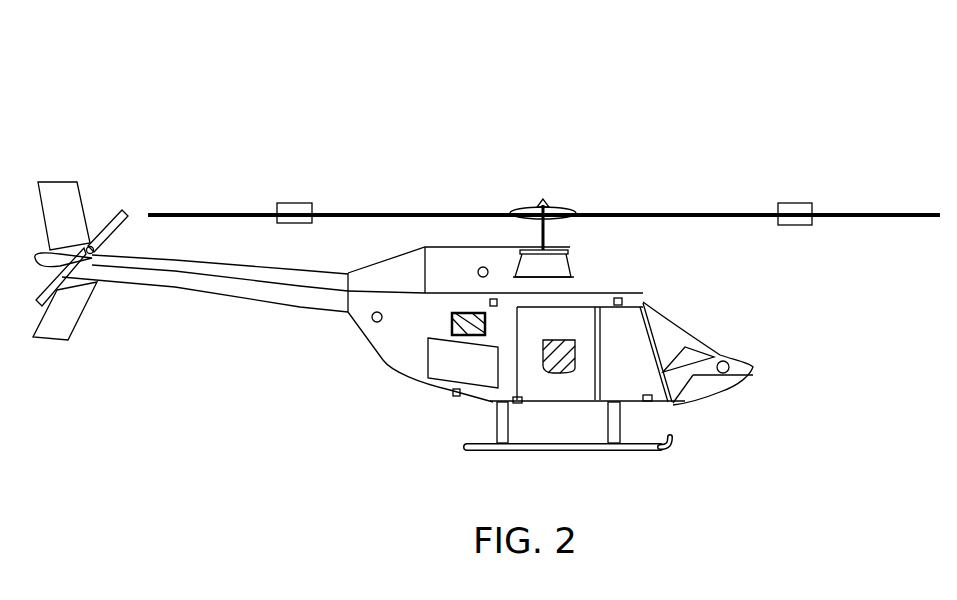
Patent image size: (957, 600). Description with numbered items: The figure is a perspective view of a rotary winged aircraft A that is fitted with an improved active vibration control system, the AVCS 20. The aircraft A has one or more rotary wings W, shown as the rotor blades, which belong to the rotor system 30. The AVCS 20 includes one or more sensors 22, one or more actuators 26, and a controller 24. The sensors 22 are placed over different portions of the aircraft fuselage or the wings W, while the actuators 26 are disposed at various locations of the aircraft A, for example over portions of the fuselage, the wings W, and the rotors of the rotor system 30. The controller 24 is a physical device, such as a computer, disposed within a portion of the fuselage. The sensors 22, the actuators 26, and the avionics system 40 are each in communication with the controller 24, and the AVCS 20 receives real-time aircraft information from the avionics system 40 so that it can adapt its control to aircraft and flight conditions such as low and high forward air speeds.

The AVCS 20 is at (243, 305).
The sensors 22 is at (484, 266).
The controller 24 is at (452, 320).
The actuators 26 is at (292, 200).
The rotor system 30 is at (710, 240).
The avionics system 40 is at (557, 373).
The wings W is at (198, 212).
The aircraft A is at (193, 93).